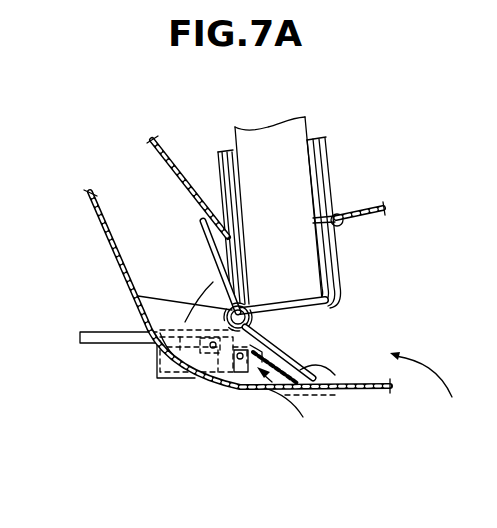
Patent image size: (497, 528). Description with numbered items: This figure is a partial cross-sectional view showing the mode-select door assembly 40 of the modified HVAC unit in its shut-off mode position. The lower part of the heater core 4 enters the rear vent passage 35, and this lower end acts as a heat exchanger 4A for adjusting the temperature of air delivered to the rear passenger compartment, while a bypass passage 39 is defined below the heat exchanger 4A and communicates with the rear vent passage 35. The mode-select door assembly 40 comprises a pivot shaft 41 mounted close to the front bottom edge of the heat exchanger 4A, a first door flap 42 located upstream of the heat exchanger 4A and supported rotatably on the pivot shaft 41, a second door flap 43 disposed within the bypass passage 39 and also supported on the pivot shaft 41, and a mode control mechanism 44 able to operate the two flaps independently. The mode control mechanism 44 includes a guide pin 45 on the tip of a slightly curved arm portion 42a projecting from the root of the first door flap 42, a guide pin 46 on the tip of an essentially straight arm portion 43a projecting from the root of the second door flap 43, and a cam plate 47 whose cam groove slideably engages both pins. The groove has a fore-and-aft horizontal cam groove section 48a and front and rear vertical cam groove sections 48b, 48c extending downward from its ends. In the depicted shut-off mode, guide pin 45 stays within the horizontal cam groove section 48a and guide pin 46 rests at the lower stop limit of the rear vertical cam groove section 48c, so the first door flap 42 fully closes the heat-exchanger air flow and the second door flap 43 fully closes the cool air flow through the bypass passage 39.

The heater core 4 is at (307, 117).
The heat exchanger 4A is at (303, 259).
The rear vent passage 35 is at (398, 308).
The bypass passage 39 is at (430, 388).
The mode-select door assembly 40 is at (198, 235).
The pivot shaft 41 is at (256, 312).
The first door flap 42 is at (198, 212).
The arm portion 42a is at (212, 286).
The second door flap 43 is at (316, 382).
The arm portion 43a is at (262, 340).
The mode control mechanism 44 is at (272, 382).
The guide pin 45 is at (200, 335).
The guide pin 46 is at (232, 378).
The cam plate 47 is at (263, 384).
The horizontal cam groove section 48a is at (150, 313).
The front vertical cam groove section 48b is at (178, 378).
The rear vertical cam groove section 48c is at (308, 395).